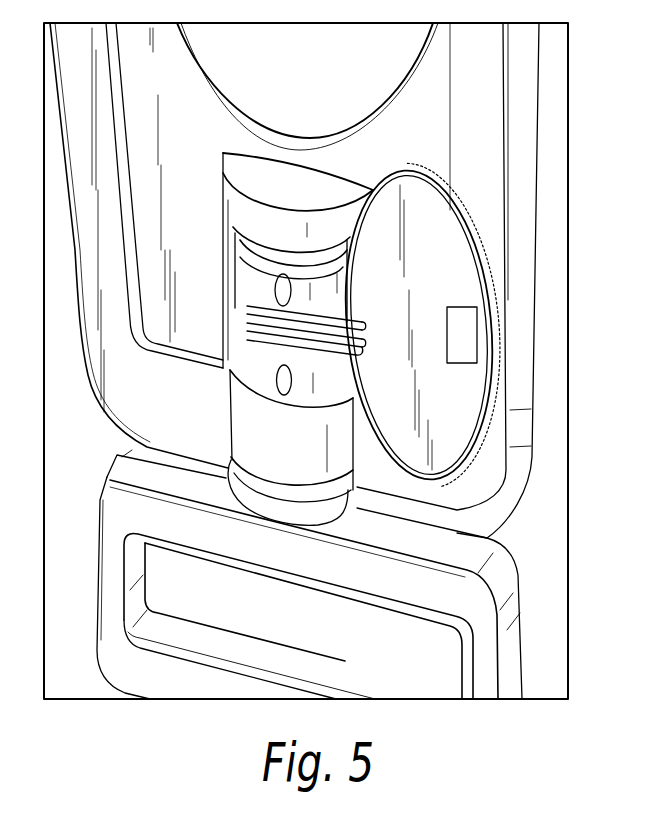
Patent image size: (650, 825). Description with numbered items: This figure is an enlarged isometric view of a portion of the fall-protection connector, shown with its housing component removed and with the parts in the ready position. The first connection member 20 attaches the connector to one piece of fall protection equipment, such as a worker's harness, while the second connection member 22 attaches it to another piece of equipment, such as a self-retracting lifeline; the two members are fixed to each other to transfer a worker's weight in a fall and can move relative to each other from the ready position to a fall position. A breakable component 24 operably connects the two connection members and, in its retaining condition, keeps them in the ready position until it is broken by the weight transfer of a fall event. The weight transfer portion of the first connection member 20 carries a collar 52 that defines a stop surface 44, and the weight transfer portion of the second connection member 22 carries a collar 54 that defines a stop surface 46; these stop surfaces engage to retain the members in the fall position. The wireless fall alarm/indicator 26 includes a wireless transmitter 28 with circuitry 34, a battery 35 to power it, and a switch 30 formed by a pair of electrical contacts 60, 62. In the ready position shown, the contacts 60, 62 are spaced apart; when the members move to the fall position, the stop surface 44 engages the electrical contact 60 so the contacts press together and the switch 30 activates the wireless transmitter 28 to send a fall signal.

The first connection member 20 is at (98, 632).
The second connection member 22 is at (524, 148).
The breakable component 24 is at (279, 382).
The wireless fall alarm/indicator 26 is at (457, 407).
The wireless transmitter 28 is at (455, 258).
The switch 30 is at (369, 328).
The circuitry 34 is at (473, 345).
The battery 35 is at (439, 176).
The stop surface 44 is at (236, 300).
The stop surface 46 is at (250, 342).
The collar 52 is at (243, 263).
The collar 54 is at (207, 338).
The electrical contact 60 is at (356, 319).
The electrical contact 62 is at (355, 358).